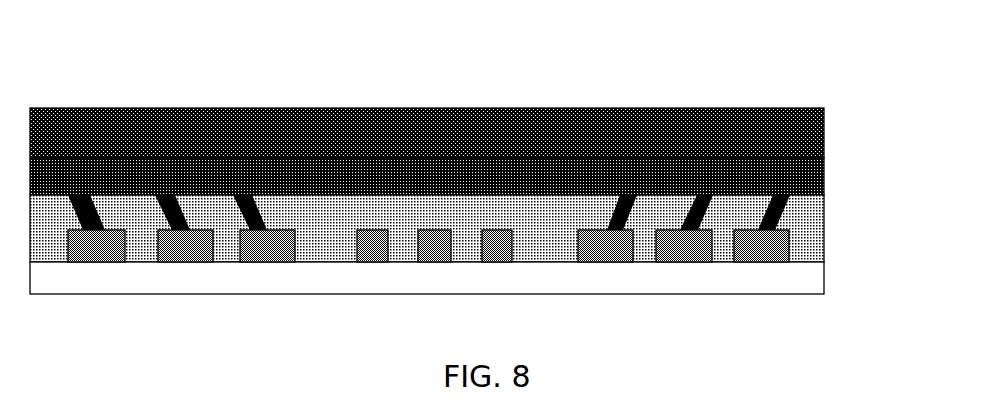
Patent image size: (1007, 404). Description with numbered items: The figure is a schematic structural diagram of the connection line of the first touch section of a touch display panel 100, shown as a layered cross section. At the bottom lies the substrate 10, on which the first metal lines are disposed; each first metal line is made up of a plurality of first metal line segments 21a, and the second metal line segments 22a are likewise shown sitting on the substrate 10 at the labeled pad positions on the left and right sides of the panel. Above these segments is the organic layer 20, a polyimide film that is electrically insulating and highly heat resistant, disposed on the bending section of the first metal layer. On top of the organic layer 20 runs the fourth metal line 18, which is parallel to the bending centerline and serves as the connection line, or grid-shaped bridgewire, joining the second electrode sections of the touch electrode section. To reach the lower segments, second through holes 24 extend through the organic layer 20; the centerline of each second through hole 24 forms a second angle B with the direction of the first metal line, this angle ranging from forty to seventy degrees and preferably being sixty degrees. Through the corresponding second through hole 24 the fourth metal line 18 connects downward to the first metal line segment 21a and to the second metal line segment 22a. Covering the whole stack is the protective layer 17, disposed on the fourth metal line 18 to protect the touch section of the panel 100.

The touch display panel 100 is at (437, 80).
The protective layer 17 is at (824, 142).
The fourth metal line 18 is at (824, 176).
The organic layer 20 is at (805, 243).
The substrate 10 is at (810, 288).
The first metal line segment 21a is at (110, 250).
The second metal line segment 22a is at (610, 252).
The second through hole 24 is at (265, 231).
The second angle B is at (240, 227).